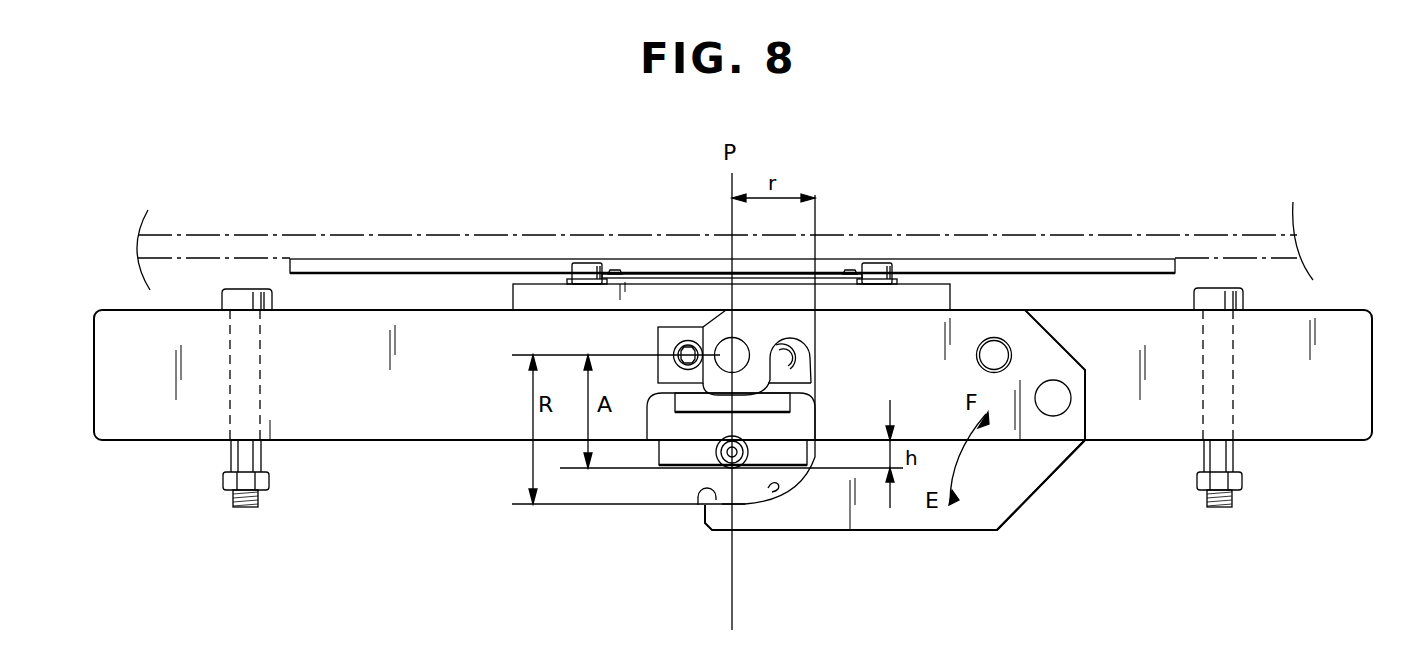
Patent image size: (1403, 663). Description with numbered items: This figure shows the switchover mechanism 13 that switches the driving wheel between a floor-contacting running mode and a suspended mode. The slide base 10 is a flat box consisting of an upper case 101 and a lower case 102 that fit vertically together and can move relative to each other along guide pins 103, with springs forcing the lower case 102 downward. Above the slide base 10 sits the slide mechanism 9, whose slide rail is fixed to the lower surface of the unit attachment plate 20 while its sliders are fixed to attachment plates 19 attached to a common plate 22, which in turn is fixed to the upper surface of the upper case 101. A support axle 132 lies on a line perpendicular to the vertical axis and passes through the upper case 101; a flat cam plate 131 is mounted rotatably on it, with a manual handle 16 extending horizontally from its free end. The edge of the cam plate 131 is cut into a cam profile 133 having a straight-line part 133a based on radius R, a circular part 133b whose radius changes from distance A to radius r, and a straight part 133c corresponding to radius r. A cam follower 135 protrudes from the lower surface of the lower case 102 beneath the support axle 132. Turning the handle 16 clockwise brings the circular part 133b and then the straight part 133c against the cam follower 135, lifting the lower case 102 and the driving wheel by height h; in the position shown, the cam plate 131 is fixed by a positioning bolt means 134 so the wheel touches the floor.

The slide mechanism 9 is at (626, 252).
The slide base 10 is at (188, 306).
The switchover mechanism 13 is at (920, 534).
The manual handle 16 is at (1055, 405).
The attachment plate 19 is at (665, 280).
The unit attachment plate 20 is at (1082, 245).
The common plate 22 is at (537, 297).
The upper case 101 is at (1330, 415).
The lower case 102 is at (1280, 430).
The guide pin 103 is at (238, 456).
The cam plate 131 is at (1000, 492).
The support axle 132 is at (738, 350).
The cam profile 133 is at (803, 431).
The straight-line part 133a is at (698, 500).
The circular part 133b is at (772, 490).
The straight part 133c is at (812, 372).
The positioning bolt means 134 is at (994, 352).
The cam follower 135 is at (715, 456).